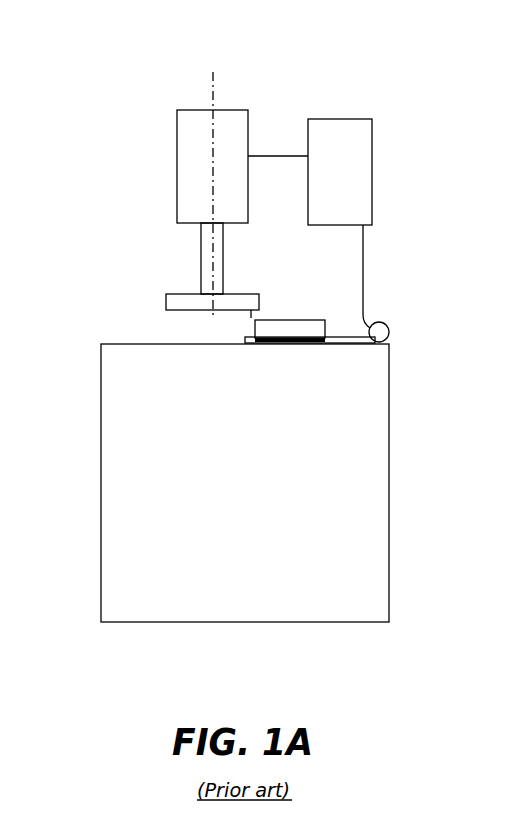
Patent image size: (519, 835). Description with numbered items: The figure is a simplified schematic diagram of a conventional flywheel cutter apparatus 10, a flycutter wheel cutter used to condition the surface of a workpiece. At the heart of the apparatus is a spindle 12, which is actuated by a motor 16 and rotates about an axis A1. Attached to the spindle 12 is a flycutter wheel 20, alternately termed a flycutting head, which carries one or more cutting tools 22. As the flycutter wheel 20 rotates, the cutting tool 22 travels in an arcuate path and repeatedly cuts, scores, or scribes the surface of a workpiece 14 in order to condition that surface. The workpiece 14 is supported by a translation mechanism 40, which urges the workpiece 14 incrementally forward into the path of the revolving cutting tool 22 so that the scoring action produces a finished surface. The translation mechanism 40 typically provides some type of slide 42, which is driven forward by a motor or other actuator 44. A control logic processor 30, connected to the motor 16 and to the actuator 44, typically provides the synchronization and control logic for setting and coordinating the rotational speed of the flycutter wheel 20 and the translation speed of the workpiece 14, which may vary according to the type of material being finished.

The axis A1 is at (213, 88).
The flywheel cutter apparatus 10 is at (45, 478).
The spindle 12 is at (201, 250).
The workpiece 14 is at (308, 320).
The motor 16 is at (177, 153).
The flycutter wheel 20 is at (166, 300).
The cutting tool 22 is at (247, 320).
The control logic processor 30 is at (352, 167).
The translation mechanism 40 is at (356, 323).
The slide 42 is at (265, 346).
The actuator 44 is at (389, 332).